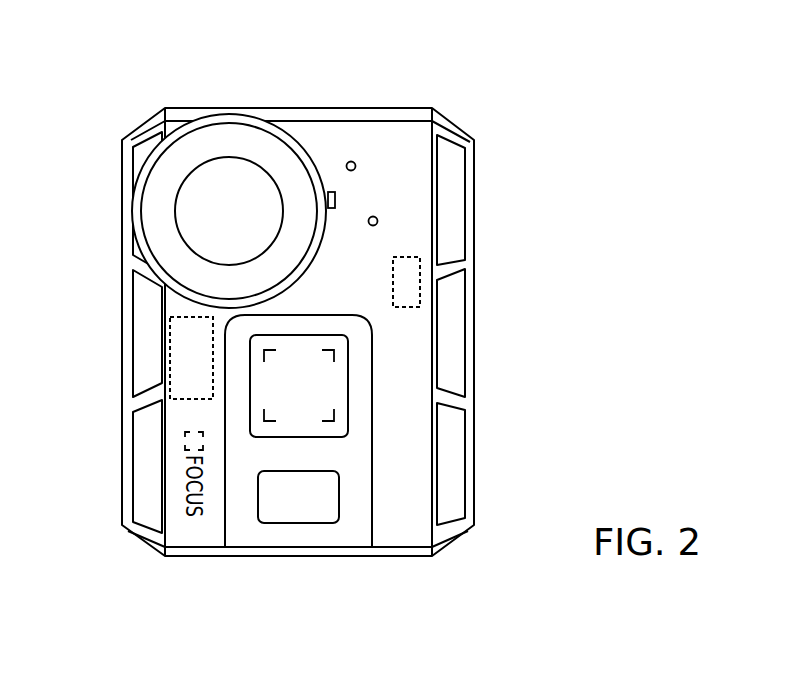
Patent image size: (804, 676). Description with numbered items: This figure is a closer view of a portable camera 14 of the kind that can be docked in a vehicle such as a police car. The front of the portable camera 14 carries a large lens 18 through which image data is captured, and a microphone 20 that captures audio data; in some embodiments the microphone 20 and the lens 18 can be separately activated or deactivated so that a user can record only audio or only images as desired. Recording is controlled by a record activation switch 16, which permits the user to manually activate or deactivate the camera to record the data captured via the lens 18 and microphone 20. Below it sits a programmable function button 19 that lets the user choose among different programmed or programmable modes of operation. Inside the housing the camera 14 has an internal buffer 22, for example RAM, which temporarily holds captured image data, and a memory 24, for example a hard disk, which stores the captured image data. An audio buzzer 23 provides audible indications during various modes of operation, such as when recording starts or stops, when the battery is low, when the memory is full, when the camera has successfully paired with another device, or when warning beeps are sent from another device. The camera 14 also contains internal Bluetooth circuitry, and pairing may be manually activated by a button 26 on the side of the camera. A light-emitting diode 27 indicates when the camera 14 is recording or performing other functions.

The portable camera 14 is at (305, 108).
The record activation switch 16 is at (348, 380).
The lens 18 is at (219, 209).
The programmable function button 19 is at (298, 523).
The microphone 20 is at (356, 166).
The internal buffer 22 is at (421, 292).
The audio buzzer 23 is at (378, 221).
The memory 24 is at (170, 357).
The button 26 is at (123, 212).
The light-emitting diode (LED) 27 is at (336, 200).